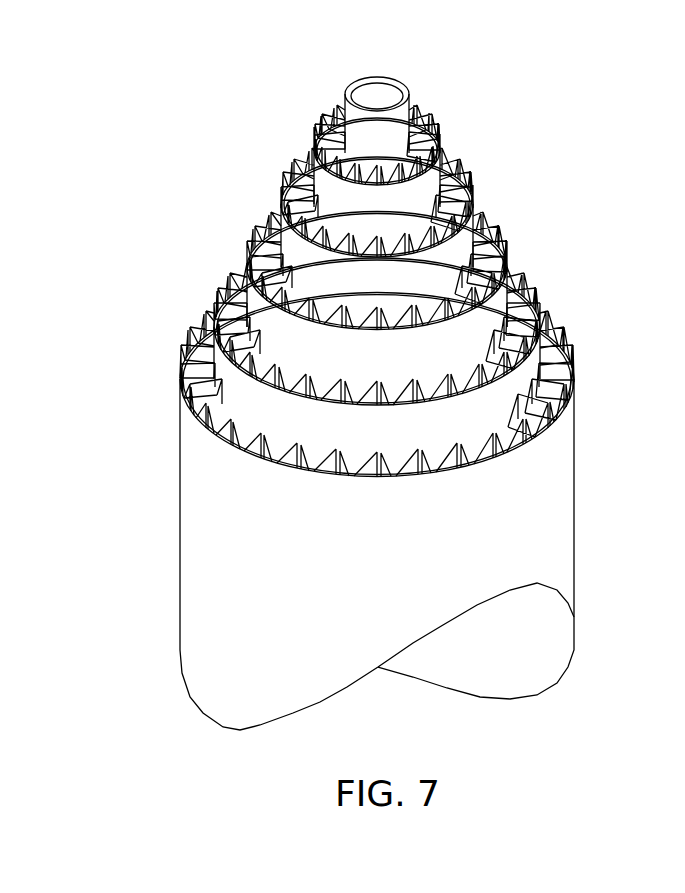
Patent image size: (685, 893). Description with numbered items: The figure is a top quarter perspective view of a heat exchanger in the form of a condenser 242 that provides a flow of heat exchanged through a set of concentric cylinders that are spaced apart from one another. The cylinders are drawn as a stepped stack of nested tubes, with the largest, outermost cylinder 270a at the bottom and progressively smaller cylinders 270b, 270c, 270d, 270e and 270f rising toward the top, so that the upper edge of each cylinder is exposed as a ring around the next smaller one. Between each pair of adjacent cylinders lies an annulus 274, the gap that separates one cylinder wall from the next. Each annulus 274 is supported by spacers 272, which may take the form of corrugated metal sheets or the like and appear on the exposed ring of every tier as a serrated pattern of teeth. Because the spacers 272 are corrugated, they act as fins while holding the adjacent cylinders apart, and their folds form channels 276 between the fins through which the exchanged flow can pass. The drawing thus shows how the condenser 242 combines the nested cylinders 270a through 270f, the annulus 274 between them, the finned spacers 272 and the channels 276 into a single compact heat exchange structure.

The condenser 242 is at (261, 123).
The concentric cylinder 270a is at (530, 516).
The concentric cylinder 270b is at (488, 431).
The concentric cylinder 270c is at (470, 361).
The concentric cylinder 270d is at (445, 291).
The concentric cylinder 270e is at (425, 219).
The concentric cylinder 270f is at (403, 145).
The spacer 272 is at (435, 147).
The annulus 274 is at (278, 340).
The channel 276 is at (248, 445).